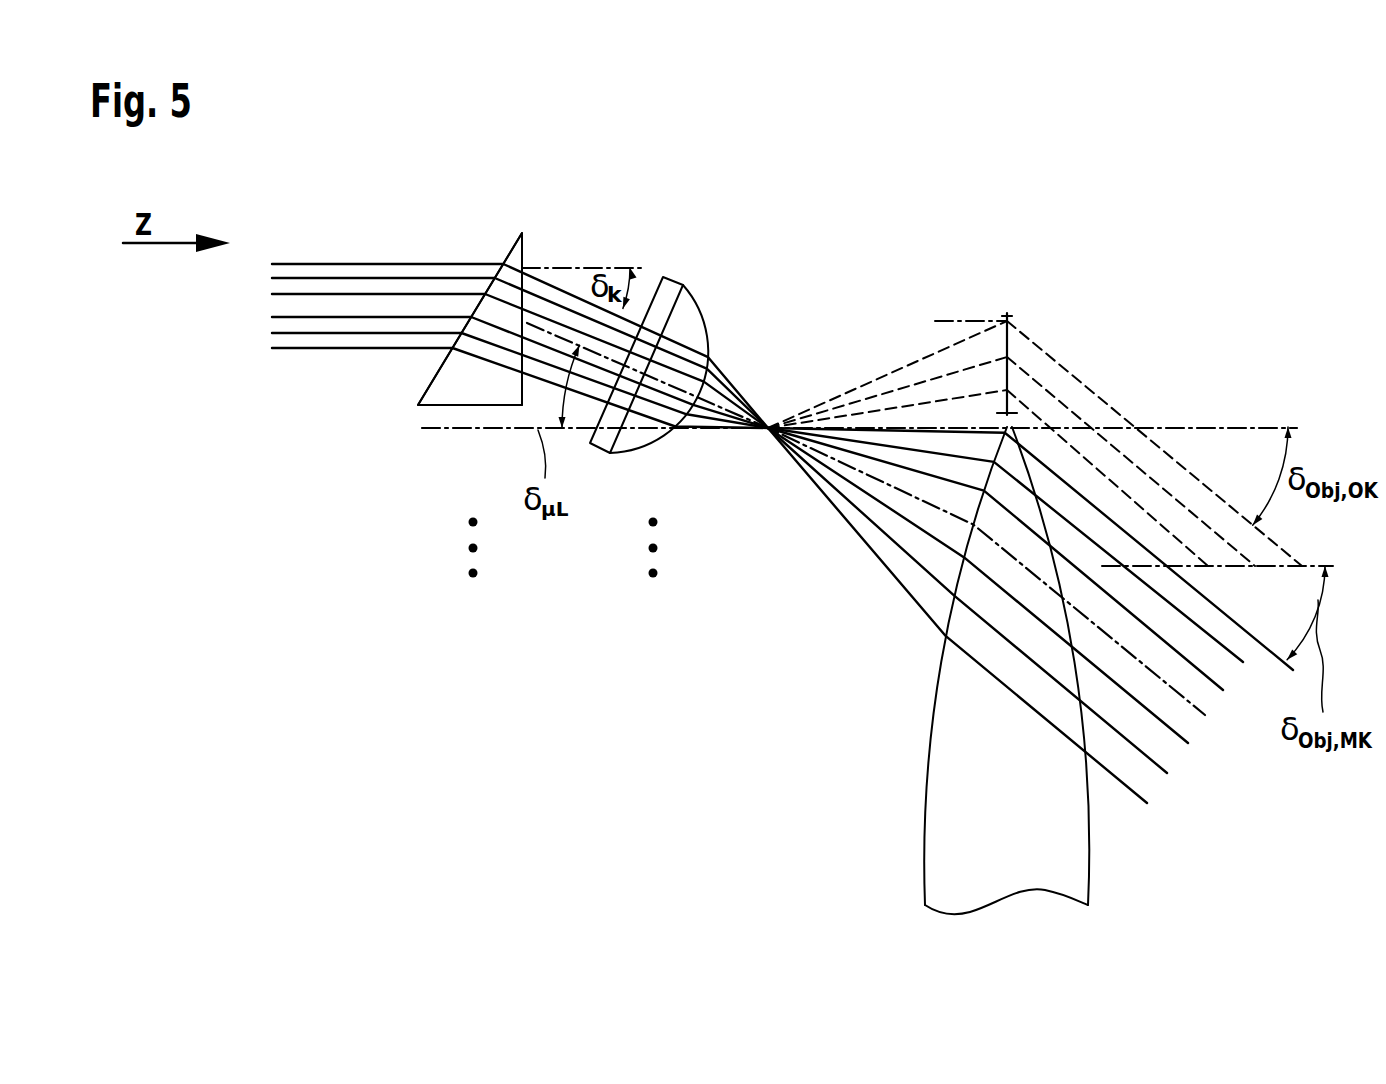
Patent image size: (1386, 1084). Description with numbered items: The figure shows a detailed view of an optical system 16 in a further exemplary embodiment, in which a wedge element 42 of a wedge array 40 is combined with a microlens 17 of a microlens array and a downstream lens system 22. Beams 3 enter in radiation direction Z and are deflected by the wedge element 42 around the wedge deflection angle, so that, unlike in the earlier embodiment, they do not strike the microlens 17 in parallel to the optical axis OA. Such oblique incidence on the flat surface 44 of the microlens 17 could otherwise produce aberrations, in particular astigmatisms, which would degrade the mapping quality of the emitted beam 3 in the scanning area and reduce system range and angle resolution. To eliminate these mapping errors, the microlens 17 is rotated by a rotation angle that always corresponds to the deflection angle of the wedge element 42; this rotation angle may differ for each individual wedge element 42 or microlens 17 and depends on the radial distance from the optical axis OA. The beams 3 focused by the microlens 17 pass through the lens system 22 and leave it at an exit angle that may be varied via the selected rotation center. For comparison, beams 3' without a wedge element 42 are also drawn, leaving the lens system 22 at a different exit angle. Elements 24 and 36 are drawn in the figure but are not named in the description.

The optical system 16 is at (175, 337).
The wedge array 40 is at (442, 398).
The wedge element 42 is at (442, 398).
The flat surface 44 is at (652, 270).
The microlens 17 is at (610, 455).
The beam 3 is at (782, 533).
The beam without wedge element 3' is at (887, 352).
The mirror element 24 is at (1012, 350).
The deflected beam path 36 is at (1104, 384).
The lens system 22 is at (945, 811).
The optical axis OA is at (430, 433).